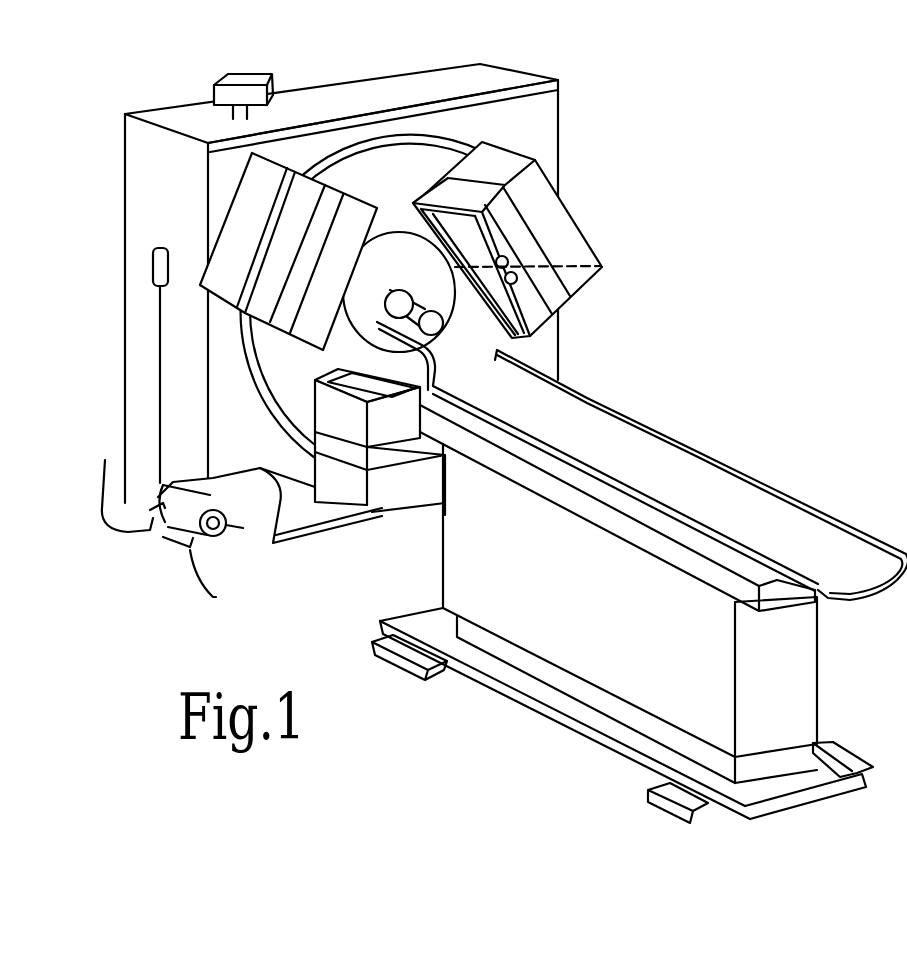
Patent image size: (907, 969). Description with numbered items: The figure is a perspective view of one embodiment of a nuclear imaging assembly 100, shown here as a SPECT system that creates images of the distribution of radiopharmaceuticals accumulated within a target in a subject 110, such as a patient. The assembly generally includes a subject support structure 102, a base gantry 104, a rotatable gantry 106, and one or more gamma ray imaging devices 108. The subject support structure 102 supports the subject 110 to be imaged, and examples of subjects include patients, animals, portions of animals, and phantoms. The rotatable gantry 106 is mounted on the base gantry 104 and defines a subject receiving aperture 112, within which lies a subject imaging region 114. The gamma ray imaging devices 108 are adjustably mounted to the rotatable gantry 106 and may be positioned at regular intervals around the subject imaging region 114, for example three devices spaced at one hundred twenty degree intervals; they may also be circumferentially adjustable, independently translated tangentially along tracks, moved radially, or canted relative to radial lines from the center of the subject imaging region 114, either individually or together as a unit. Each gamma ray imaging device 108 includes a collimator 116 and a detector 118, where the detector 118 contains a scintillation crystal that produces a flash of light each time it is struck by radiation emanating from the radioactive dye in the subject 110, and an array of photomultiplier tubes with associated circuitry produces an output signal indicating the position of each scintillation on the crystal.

The nuclear imaging assembly 100 is at (736, 133).
The subject support structure 102 is at (606, 430).
The base gantry 104 is at (490, 61).
The rotatable gantry 106 is at (421, 162).
The gamma ray imaging device 108 is at (229, 219).
The subject 110 is at (414, 297).
The subject receiving aperture 112 is at (382, 342).
The subject imaging region 114 is at (600, 266).
The collimator 116 is at (558, 355).
The detector 118 is at (567, 196).